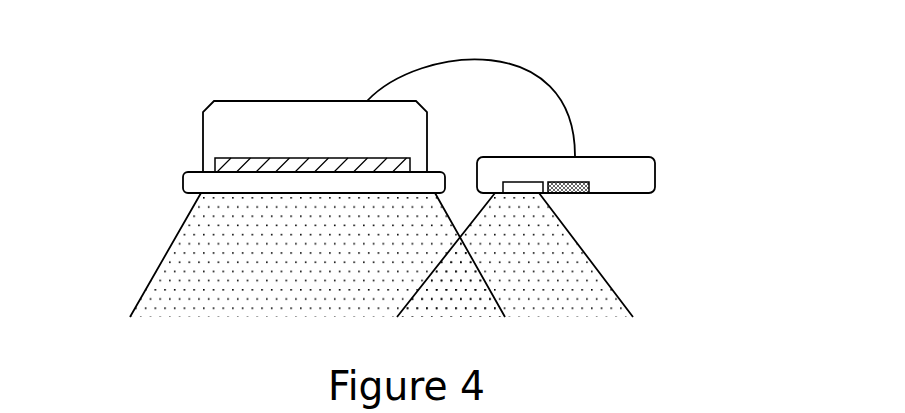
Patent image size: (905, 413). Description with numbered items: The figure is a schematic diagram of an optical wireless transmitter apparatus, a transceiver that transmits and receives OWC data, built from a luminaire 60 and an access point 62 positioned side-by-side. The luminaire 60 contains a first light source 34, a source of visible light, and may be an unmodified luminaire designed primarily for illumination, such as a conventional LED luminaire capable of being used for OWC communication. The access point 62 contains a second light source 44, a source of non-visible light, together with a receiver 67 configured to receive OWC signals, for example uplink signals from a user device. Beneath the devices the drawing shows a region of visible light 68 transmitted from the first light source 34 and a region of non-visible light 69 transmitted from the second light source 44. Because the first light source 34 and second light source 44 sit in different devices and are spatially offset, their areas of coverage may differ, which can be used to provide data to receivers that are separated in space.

The luminaire 60 is at (303, 117).
The first light source 34 is at (217, 158).
The access point 62 is at (627, 170).
The receiver 67 is at (580, 188).
The second light source 44 is at (520, 186).
The region of visible light 68 is at (217, 293).
The region of non-visible light 69 is at (555, 295).